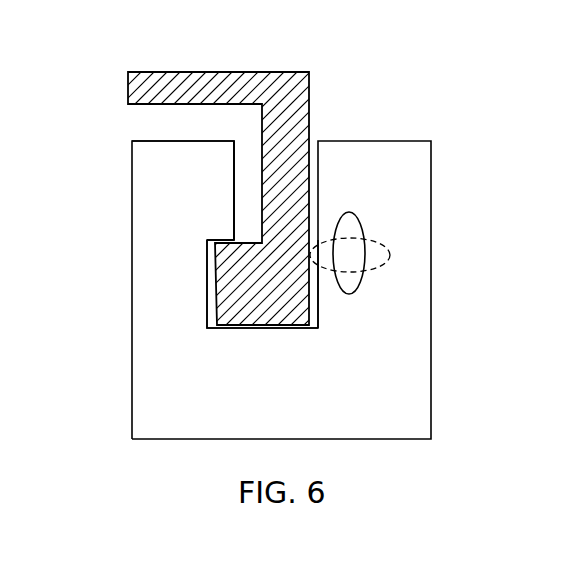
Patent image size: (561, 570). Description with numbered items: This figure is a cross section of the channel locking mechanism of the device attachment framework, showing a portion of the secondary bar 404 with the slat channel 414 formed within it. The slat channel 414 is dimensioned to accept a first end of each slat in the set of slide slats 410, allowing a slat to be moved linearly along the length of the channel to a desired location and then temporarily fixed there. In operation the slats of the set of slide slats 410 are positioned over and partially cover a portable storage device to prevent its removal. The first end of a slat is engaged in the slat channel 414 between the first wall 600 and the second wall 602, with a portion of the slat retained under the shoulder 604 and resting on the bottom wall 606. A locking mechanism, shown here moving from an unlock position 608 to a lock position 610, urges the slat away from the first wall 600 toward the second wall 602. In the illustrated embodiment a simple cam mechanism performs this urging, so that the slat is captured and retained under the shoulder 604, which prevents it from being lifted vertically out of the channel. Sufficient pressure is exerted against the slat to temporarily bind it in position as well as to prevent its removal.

The set of slide slats 410 is at (215, 72).
The slat channel 414 is at (242, 162).
The secondary bar 404 is at (132, 177).
The first wall 600 is at (320, 172).
The second wall 602 is at (234, 197).
The shoulder 604 is at (222, 240).
The bottom wall 606 is at (255, 330).
The unlock position 608 is at (360, 228).
The lock position 610 is at (390, 260).